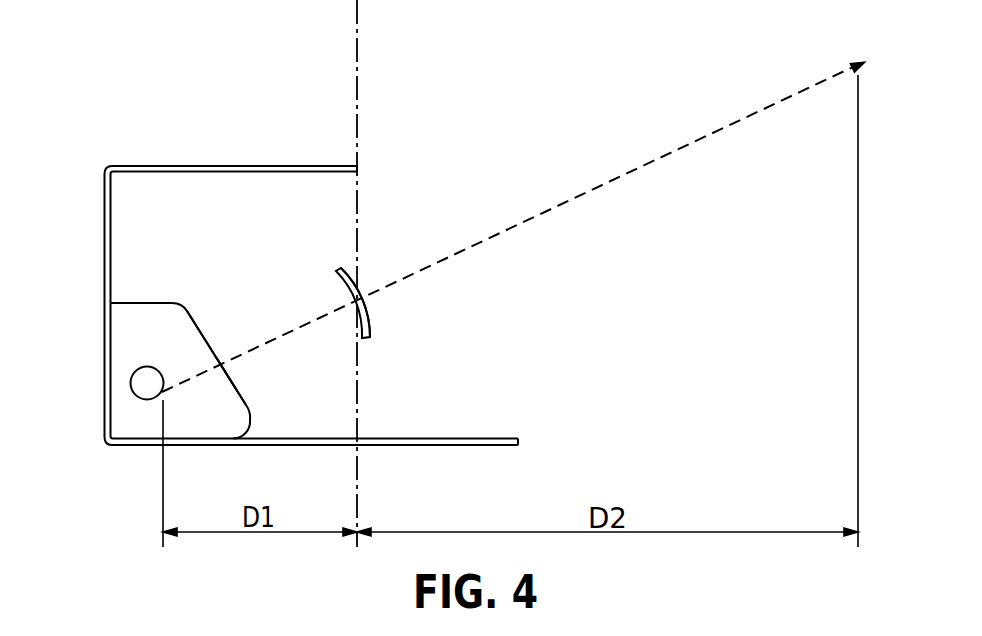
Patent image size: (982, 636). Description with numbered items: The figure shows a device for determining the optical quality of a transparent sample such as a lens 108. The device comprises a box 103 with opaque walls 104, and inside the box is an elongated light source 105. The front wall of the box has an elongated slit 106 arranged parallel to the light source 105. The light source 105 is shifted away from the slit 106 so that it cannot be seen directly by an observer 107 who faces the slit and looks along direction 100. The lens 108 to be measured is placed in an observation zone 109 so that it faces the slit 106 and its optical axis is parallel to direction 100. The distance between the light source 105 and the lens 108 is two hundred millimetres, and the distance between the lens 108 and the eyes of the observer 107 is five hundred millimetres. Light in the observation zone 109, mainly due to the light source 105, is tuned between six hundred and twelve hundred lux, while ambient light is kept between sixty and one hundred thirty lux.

The direction 100 is at (607, 182).
The box 103 is at (187, 286).
The opaque walls 104 is at (198, 325).
The elongated light source 105 is at (131, 375).
The elongated slit 106 is at (231, 380).
The observer 107 is at (847, 53).
The lens 108 is at (368, 320).
The observation zone 109 is at (382, 259).